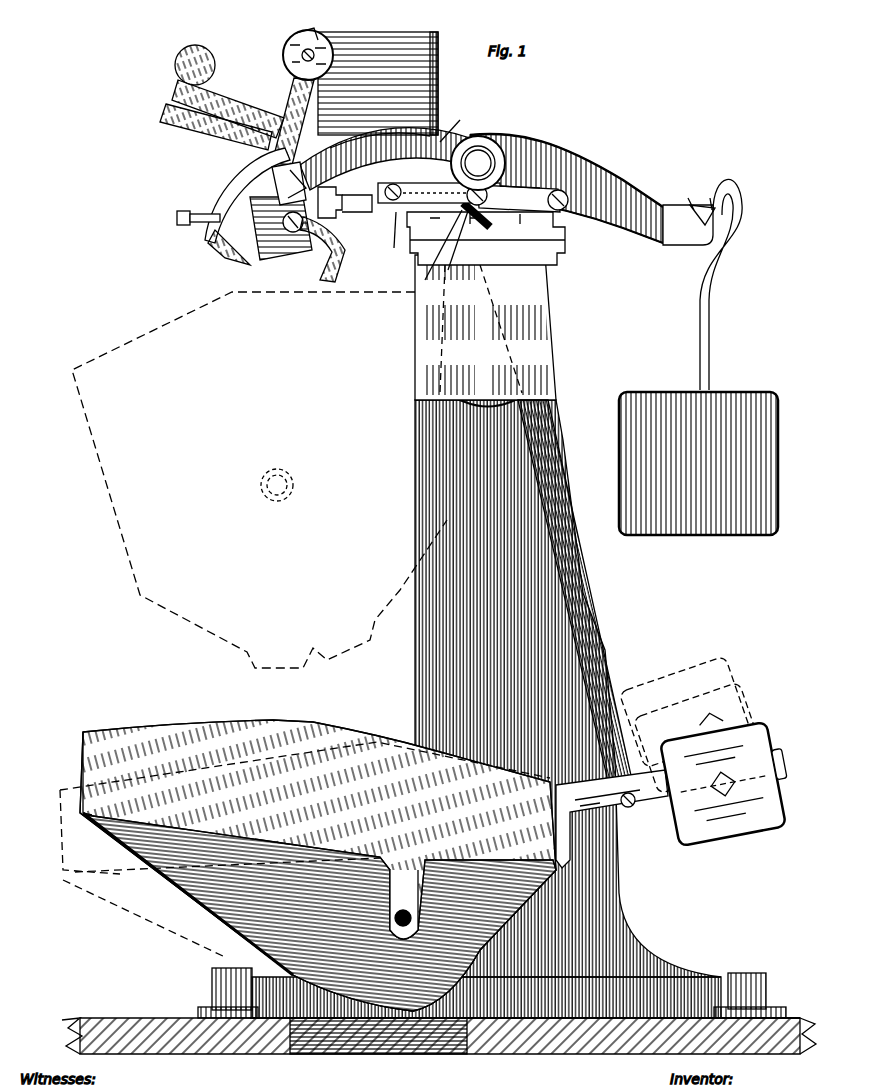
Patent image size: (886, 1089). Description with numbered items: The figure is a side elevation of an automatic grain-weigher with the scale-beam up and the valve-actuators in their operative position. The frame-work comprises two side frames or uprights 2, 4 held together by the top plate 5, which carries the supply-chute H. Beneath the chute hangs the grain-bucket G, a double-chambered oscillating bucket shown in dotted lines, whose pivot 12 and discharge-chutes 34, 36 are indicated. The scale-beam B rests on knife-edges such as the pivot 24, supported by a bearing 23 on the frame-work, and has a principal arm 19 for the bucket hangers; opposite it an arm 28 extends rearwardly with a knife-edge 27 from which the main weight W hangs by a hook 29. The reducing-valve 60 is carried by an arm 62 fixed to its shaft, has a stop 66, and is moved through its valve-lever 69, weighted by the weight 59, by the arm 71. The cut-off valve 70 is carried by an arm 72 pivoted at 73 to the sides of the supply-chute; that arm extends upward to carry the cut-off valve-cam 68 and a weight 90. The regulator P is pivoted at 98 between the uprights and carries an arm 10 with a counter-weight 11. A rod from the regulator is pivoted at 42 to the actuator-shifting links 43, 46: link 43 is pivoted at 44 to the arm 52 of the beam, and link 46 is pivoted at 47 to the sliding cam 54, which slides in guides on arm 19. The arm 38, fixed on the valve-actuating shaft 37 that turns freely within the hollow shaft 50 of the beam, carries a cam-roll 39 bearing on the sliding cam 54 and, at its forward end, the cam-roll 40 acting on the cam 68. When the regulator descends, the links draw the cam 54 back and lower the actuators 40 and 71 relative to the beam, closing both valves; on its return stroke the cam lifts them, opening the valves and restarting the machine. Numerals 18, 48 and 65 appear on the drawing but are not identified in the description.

The side frame or upright 2 is at (550, 322).
The side frame or upright 4 is at (560, 436).
The top plate 5 is at (566, 238).
The arm 10 is at (642, 812).
The counter-weight 11 is at (748, 830).
The pivot 12 is at (277, 485).
The rod 18 is at (586, 600).
The principal arm 19 is at (385, 159).
The bearing 23 is at (459, 243).
The pivot or knife-edge 24 is at (443, 250).
The knife-edge 27 is at (696, 200).
The arm 28 is at (650, 196).
The hook 29 is at (726, 192).
The discharge-chute 34 is at (283, 668).
The discharge-chute 36 is at (352, 660).
The valve-actuating shaft 37 is at (478, 163).
The arm 38 is at (452, 120).
The cam-roll 39 is at (380, 143).
The cam-roll 40 is at (295, 121).
The pivot 42 is at (490, 206).
The link 43 is at (513, 198).
The pivot 44 is at (566, 206).
The link 46 is at (439, 193).
The pivot 47 is at (392, 238).
The link 48 is at (520, 187).
The hollow shaft 50 is at (478, 148).
The arm 52 is at (530, 146).
The sliding cam 54 is at (355, 200).
The weight 59 is at (180, 52).
The reducing-valve 60 is at (240, 262).
The arm 62 is at (236, 172).
The pivot 65 is at (283, 262).
The stop 66 is at (180, 212).
The cut-off valve-cam 68 is at (278, 186).
The valve-lever 69 is at (252, 106).
The cut-off valve 70 is at (322, 268).
The arm 71 is at (180, 116).
The arm 72 is at (268, 208).
The pivot 73 is at (290, 230).
The weight 90 is at (300, 44).
The pivot 98 is at (403, 908).
The scale-beam B is at (566, 178).
The grain-bucket G is at (258, 480).
The supply-chute H is at (378, 72).
The regulator P is at (308, 857).
The main weight W is at (698, 475).